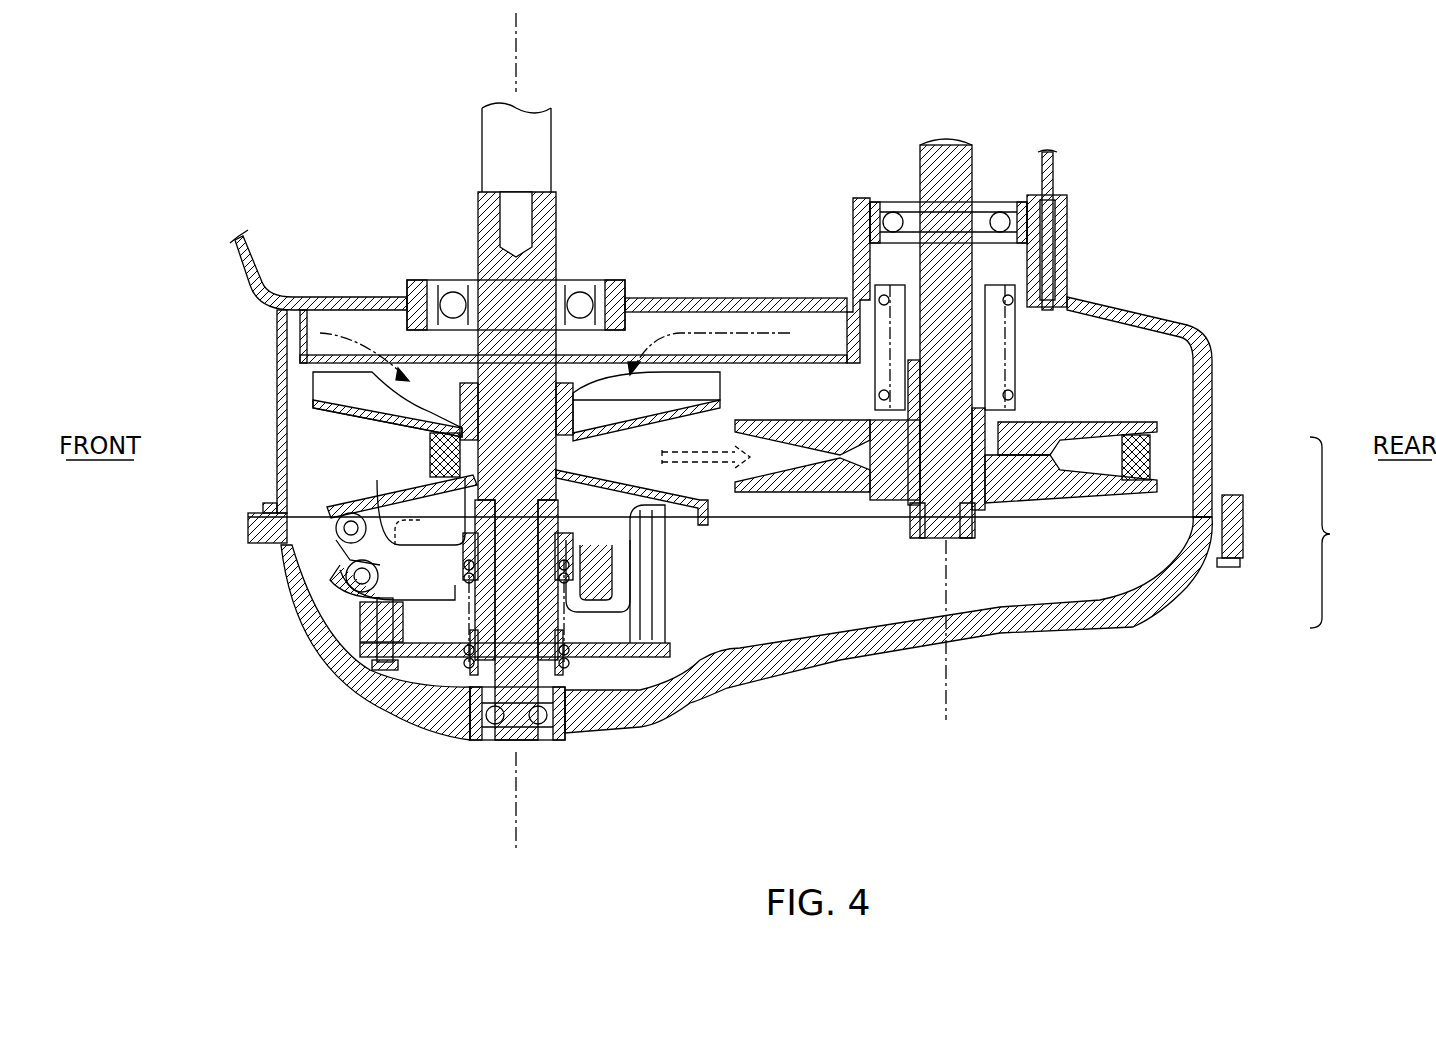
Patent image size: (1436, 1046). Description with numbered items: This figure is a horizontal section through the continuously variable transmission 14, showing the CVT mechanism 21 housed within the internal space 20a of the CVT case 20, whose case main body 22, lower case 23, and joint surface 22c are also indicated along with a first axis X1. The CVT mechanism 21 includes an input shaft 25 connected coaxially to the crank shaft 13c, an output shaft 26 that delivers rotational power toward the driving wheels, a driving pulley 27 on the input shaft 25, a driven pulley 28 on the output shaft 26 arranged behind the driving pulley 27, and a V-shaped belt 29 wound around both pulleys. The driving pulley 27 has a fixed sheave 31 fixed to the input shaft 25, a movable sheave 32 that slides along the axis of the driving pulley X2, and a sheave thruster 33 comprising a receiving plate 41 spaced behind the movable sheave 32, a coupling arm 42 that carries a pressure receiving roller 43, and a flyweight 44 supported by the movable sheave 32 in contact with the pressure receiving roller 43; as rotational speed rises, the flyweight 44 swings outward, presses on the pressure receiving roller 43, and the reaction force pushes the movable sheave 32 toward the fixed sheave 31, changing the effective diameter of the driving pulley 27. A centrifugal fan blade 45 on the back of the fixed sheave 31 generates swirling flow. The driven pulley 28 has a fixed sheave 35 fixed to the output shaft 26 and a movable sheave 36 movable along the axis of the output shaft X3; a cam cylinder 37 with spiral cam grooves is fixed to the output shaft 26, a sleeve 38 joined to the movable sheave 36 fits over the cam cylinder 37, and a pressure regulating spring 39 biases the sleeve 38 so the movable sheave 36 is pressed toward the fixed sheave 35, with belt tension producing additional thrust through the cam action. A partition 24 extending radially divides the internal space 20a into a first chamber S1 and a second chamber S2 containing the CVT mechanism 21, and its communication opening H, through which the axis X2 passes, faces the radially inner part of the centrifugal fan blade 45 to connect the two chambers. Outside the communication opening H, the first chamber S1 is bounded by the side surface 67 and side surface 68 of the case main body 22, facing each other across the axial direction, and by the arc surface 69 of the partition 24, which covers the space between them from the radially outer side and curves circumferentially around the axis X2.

The crank shaft 13c is at (482, 155).
The input shaft 25 is at (556, 240).
The output shaft 26 is at (946, 160).
The communication opening H is at (380, 335).
The first chamber S1 is at (660, 330).
The side surface 67 is at (705, 320).
The side surface 68 is at (748, 355).
The arc surface 69 is at (840, 345).
The cam cylinder 37 is at (1055, 300).
The continuously variable transmission 14 is at (1190, 322).
The internal space 20a is at (1200, 382).
The partition 24 is at (300, 335).
The centrifugal fan blade 45 is at (313, 385).
The fixed sheave 31 is at (320, 400).
The movable sheave 32 is at (330, 500).
The driving pulley 27 is at (330, 515).
The pressure receiving roller 43 is at (335, 525).
The sheave thruster 33 is at (335, 585).
The receiving plate 41 is at (365, 615).
The flyweight 44 is at (425, 540).
The movable sheave 36 is at (820, 418).
The sleeve 38 is at (1012, 320).
The pressure regulating spring 39 is at (1018, 355).
The case main body 22 is at (743, 369).
The CVT case 20 is at (760, 467).
The lower case 23 is at (1185, 590).
The belt 29 is at (740, 490).
The fixed sheave 35 is at (830, 495).
The driven pulley 28 is at (1015, 515).
The joint surface 22c is at (1130, 517).
The coupling arm 42 is at (650, 660).
The CVT mechanism 21 is at (710, 568).
The second chamber S2 is at (840, 655).
The first axis X1 is at (516, 30).
The axis of the driving pulley X2 is at (516, 820).
The axis of the output shaft X3 is at (946, 705).